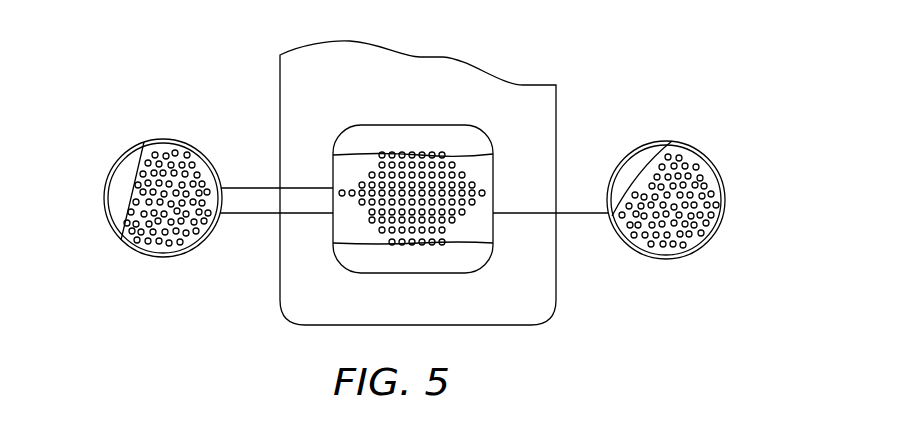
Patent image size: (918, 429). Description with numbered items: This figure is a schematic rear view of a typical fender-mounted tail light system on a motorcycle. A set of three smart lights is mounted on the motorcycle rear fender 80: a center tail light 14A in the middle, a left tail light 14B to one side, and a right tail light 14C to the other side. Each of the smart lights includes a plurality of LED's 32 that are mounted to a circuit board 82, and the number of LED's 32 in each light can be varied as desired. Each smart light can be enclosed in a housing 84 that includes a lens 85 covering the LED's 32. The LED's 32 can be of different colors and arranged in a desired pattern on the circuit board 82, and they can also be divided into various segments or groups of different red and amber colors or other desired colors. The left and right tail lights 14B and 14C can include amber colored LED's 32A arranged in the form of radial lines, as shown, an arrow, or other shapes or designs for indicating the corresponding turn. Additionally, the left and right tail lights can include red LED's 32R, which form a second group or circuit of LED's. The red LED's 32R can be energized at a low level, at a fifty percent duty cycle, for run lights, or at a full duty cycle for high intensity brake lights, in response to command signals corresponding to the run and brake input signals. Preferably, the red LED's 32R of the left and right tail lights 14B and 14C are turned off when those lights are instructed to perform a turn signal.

The center tail light 14A is at (435, 123).
The left tail light 14B is at (123, 240).
The right tail light 14C is at (707, 148).
The motorcycle rear fender 80 is at (556, 162).
The circuit board 82 is at (190, 160).
The housing 84 is at (207, 243).
The lens 85 is at (122, 167).
The LED's 32 is at (128, 200).
The amber colored LED's 32A is at (170, 168).
The red LED's 32R is at (175, 250).